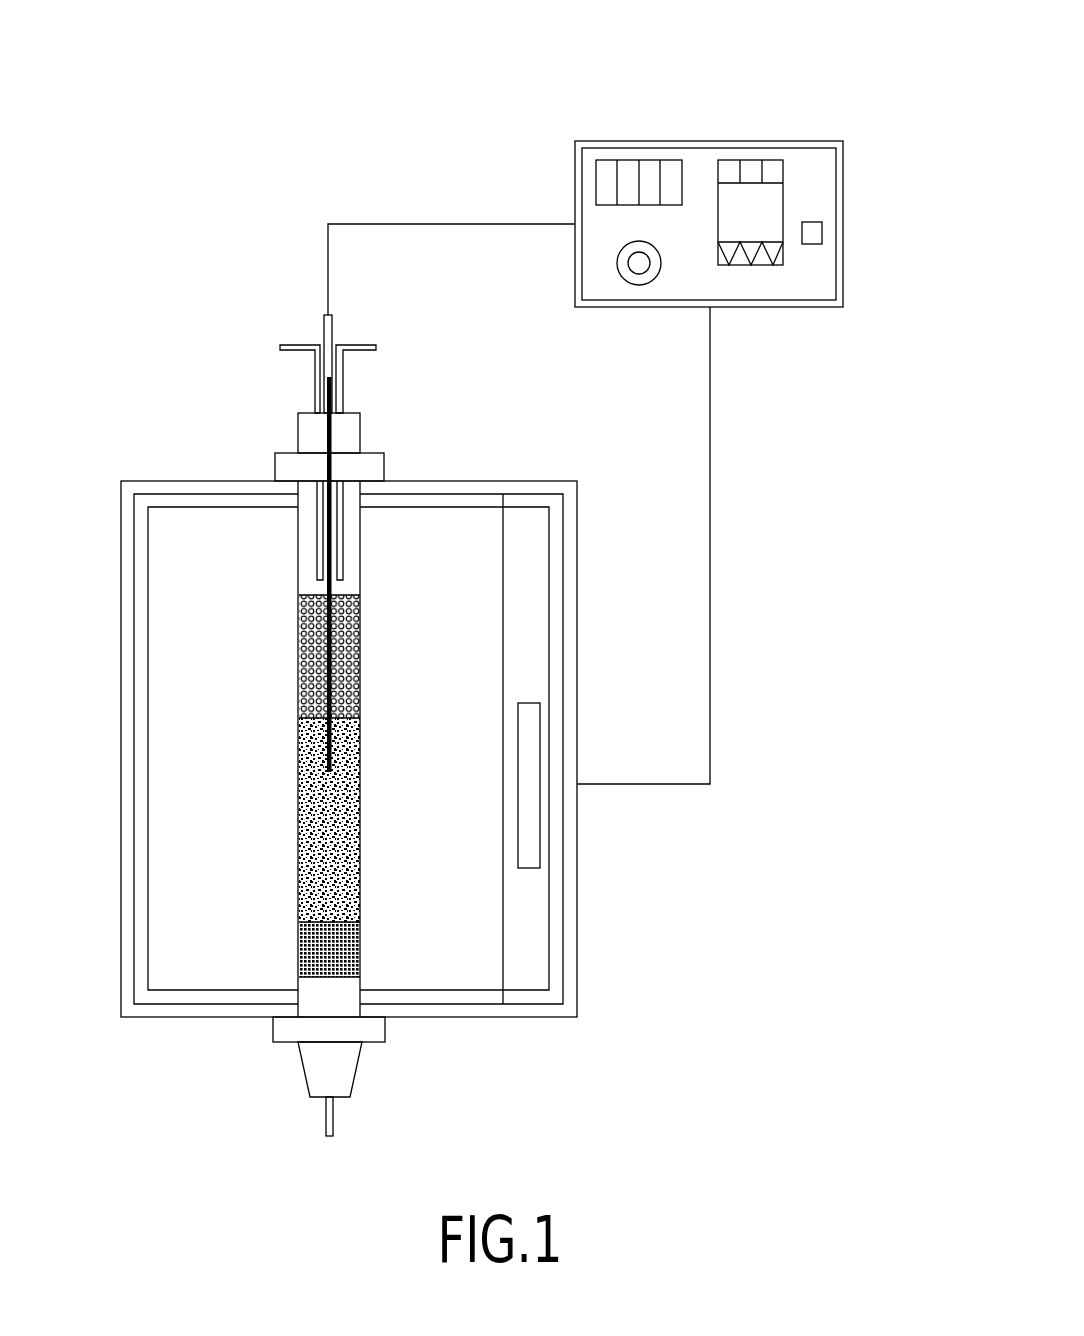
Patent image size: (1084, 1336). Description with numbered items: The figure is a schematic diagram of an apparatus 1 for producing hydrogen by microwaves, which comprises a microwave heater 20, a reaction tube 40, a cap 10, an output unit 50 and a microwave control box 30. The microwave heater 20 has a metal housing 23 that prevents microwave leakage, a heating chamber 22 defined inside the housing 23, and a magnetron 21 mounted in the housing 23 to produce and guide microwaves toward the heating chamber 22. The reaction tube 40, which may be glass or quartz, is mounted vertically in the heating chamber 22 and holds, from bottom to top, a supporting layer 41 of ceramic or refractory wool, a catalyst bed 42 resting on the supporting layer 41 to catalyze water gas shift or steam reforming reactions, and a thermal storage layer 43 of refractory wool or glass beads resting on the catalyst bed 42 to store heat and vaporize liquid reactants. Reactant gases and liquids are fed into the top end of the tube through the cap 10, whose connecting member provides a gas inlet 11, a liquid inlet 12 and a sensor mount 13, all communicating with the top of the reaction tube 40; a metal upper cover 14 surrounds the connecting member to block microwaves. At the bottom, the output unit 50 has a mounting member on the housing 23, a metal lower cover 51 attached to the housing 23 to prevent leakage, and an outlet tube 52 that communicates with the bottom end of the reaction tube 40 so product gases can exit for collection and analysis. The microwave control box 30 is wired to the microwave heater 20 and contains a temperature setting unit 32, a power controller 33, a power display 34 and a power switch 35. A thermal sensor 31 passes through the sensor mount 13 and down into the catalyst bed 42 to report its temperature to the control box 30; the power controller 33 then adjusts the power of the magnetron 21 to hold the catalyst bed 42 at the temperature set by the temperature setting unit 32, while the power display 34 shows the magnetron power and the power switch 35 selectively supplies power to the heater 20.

The apparatus of producing hydrogen by microwaves 1 is at (320, 72).
The cap 10 is at (254, 406).
The gas inlet 11 is at (365, 350).
The liquid inlet 12 is at (282, 347).
The sensor mount 13 is at (332, 318).
The upper cover 14 is at (275, 465).
The microwave heater 20 is at (612, 975).
The magnetron 21 is at (535, 833).
The heating chamber 22 is at (450, 528).
The housing 23 is at (562, 615).
The microwave control box 30 is at (606, 133).
The thermal sensor 31 is at (336, 580).
The temperature setting unit 32 is at (750, 265).
The power controller 33 is at (638, 270).
The power display 34 is at (668, 165).
The power switch 35 is at (818, 235).
The reaction tube 40 is at (382, 840).
The supporting layer 41 is at (307, 950).
The catalyst bed 42 is at (308, 853).
The thermal storage layer 43 is at (310, 675).
The output unit 50 is at (271, 1058).
The lower cover 51 is at (385, 1035).
The outlet tube 52 is at (325, 1115).